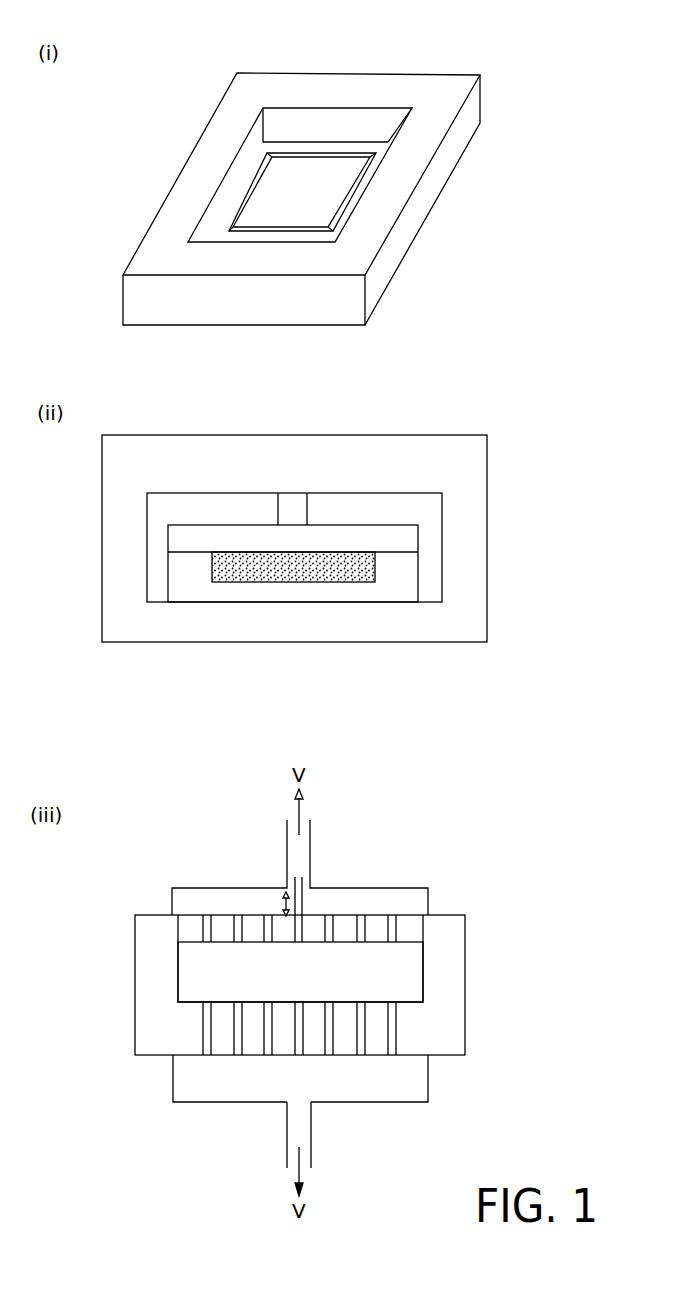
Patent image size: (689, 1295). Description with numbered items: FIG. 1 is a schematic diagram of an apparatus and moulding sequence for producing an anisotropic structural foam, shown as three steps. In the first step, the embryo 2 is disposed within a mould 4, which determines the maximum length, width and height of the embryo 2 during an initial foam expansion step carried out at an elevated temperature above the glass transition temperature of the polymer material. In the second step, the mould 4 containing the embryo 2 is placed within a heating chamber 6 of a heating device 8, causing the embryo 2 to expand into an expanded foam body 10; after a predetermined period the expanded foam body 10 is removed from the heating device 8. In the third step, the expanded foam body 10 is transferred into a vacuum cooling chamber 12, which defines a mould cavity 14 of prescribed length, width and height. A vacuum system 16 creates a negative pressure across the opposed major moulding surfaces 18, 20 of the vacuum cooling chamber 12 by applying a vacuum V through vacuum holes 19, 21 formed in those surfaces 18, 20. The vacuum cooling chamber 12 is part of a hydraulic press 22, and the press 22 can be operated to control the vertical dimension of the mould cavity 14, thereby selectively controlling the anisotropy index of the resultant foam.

The embryo 2 is at (272, 192).
The mould 4 is at (388, 195).
The heating chamber 6 is at (425, 510).
The heating device 8 is at (473, 567).
The expanded foam body 10 is at (290, 572).
The vacuum cooling chamber 12 is at (410, 958).
The mould cavity 14 is at (423, 990).
The vacuum system 16 is at (338, 898).
The major moulding surface 18 is at (193, 935).
The vacuum holes 19 is at (217, 928).
The major moulding surface 20 is at (183, 1003).
The vacuum holes 21 is at (235, 1035).
The hydraulic press 22 is at (377, 927).